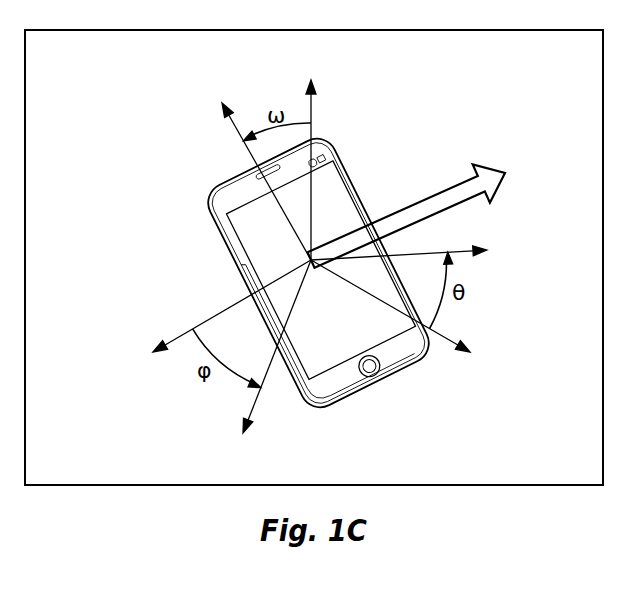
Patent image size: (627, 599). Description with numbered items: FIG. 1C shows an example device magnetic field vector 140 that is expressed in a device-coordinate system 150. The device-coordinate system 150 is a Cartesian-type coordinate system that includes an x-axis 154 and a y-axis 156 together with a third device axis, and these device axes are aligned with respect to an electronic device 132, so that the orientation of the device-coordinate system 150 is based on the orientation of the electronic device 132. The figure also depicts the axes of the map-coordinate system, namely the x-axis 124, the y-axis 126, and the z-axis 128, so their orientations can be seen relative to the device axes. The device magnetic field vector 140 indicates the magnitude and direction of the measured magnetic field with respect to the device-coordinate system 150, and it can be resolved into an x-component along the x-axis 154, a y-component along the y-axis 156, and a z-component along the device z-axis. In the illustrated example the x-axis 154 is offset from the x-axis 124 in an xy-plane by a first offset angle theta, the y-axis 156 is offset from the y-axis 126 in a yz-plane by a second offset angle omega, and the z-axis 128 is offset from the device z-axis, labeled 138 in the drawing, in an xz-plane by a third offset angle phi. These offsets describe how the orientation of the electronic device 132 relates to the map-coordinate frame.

The device-coordinate system 150 is at (184, 97).
The electronic device 132 is at (199, 190).
The y-axis 126 is at (313, 115).
The y-axis 156 is at (248, 153).
The z-axis 128 is at (182, 334).
The Z3 device axis 138 is at (258, 400).
The x-axis 154 is at (460, 250).
The x-axis 124 is at (447, 337).
The device magnetic field vector 140 is at (432, 187).